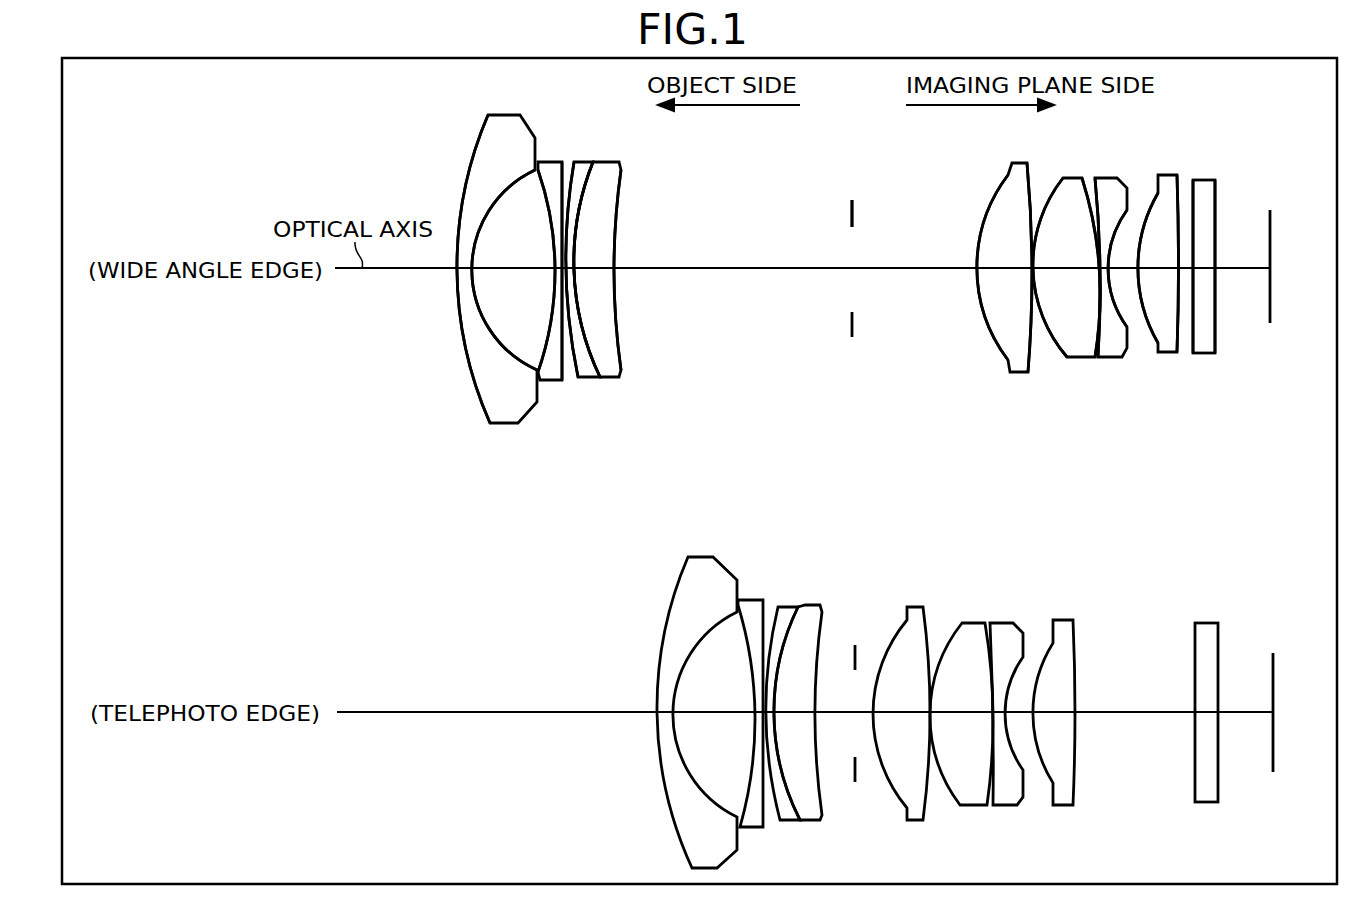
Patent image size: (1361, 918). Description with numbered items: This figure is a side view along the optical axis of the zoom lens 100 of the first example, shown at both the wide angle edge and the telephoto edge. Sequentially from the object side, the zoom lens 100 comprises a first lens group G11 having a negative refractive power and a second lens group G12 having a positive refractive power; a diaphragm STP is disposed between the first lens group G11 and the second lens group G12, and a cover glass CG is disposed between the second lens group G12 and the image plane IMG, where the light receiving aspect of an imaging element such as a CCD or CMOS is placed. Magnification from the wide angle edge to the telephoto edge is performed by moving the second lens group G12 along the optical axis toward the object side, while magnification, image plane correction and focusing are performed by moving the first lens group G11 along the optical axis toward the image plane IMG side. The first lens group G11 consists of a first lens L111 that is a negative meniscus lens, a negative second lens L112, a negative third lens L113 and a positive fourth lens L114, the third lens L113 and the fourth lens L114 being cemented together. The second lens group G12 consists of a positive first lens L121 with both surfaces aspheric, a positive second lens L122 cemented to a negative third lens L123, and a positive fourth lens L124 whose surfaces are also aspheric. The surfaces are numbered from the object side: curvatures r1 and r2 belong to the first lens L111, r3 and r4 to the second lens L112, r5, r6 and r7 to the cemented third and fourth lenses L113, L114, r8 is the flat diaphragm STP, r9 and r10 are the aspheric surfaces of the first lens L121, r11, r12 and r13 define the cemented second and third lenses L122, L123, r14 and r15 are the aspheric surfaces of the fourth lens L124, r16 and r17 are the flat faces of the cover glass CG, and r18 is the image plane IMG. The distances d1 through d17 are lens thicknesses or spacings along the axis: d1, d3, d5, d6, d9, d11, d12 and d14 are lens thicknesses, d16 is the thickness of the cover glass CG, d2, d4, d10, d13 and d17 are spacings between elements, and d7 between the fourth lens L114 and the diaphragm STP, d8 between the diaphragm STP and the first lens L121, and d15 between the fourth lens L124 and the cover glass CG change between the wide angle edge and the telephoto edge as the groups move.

The zoom lens 100 is at (382, 96).
The first lens group G11 is at (541, 315).
The second lens group G12 is at (1074, 362).
The first lens L111 is at (472, 304).
The second lens L112 is at (536, 283).
The third lens L113 is at (593, 297).
The fourth lens L114 is at (621, 307).
The first lens L121 is at (977, 328).
The second lens L122 is at (1060, 309).
The third lens L123 is at (1120, 309).
The fourth lens L124 is at (1181, 309).
The diaphragm STP is at (821, 246).
The cover glass CG is at (1244, 326).
The image plane IMG is at (1272, 307).
The curvature of first surface r1 is at (462, 193).
The curvature of second surface r2 is at (506, 188).
The curvature of third surface r3 is at (535, 192).
The curvature of fourth surface r4 is at (562, 178).
The curvature of fifth surface r5 is at (573, 176).
The curvature of sixth surface r6 is at (593, 175).
The curvature of seventh surface r7 is at (623, 183).
The curvature of eighth surface r8 is at (865, 191).
The curvature of ninth surface r9 is at (982, 226).
The curvature of tenth surface r10 is at (1027, 198).
The curvature of eleventh surface r11 is at (1055, 190).
The curvature of twelfth surface r12 is at (1082, 180).
The curvature of thirteenth surface r13 is at (1097, 200).
The curvature of fourteenth surface r14 is at (1128, 210).
The curvature of fifteenth surface r15 is at (1153, 220).
The curvature of sixteenth surface r16 is at (1178, 195).
The curvature of seventeenth surface r17 is at (1215, 213).
The curvature of eighteenth surface r18 is at (1271, 216).
The thickness of first lens d1 is at (460, 288).
The distance between first and second lenses d2 is at (542, 323).
The thickness of second lens d3 is at (552, 343).
The distance between second and third lenses d4 is at (568, 285).
The thickness of third lens d5 is at (580, 317).
The thickness of fourth lens d6 is at (594, 272).
The distance between first lens group and diaphragm d7 is at (737, 270).
The distance between diaphragm and second lens group d8 is at (896, 270).
The thickness of first lens d9 is at (1006, 270).
The distance between first and second lenses d10 is at (1035, 313).
The thickness of second lens d11 is at (1062, 330).
The thickness of third lens d12 is at (1065, 270).
The distance between third and fourth lenses d13 is at (1108, 298).
The thickness of fourth lens d14 is at (1146, 285).
The distance between second lens group and cover glass d15 is at (1187, 280).
The thickness of cover glass d16 is at (1217, 323).
The distance between cover glass and image plane d17 is at (1250, 268).